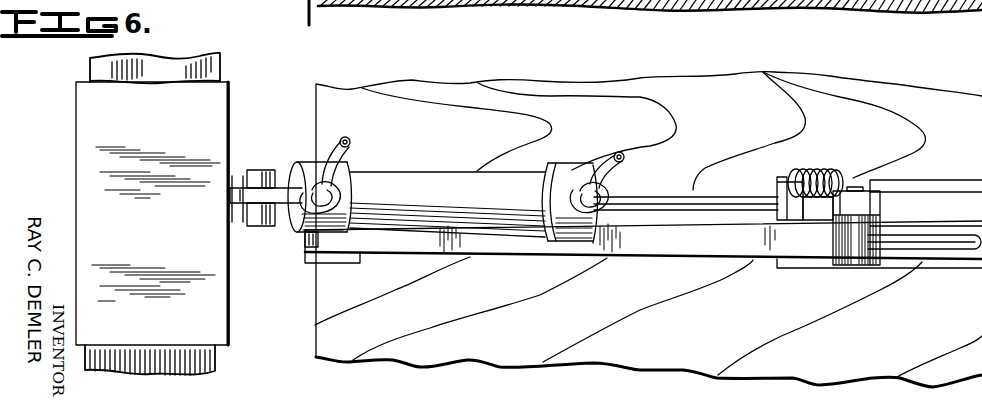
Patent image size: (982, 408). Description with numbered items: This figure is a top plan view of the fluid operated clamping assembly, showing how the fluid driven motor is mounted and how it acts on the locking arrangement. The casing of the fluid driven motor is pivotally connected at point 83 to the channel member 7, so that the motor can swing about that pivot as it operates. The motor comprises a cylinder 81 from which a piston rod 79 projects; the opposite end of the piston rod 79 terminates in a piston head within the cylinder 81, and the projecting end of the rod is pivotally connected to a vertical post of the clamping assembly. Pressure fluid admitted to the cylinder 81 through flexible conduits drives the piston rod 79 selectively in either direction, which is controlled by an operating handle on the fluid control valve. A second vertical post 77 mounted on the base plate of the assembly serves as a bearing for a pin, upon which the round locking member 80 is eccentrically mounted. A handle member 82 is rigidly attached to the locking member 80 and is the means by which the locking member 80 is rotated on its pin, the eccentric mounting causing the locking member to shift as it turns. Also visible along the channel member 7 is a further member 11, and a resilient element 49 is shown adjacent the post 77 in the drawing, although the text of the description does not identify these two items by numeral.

The channel member 7 is at (76, 242).
The door frame member 11 is at (91, 66).
The pivot point 83 is at (256, 172).
The cylinder 81 is at (438, 175).
The piston rod 79 is at (673, 194).
The spring 49 is at (822, 179).
The vertical post 77 is at (880, 197).
The round locking member 80 is at (830, 260).
The handle member 82 is at (935, 260).